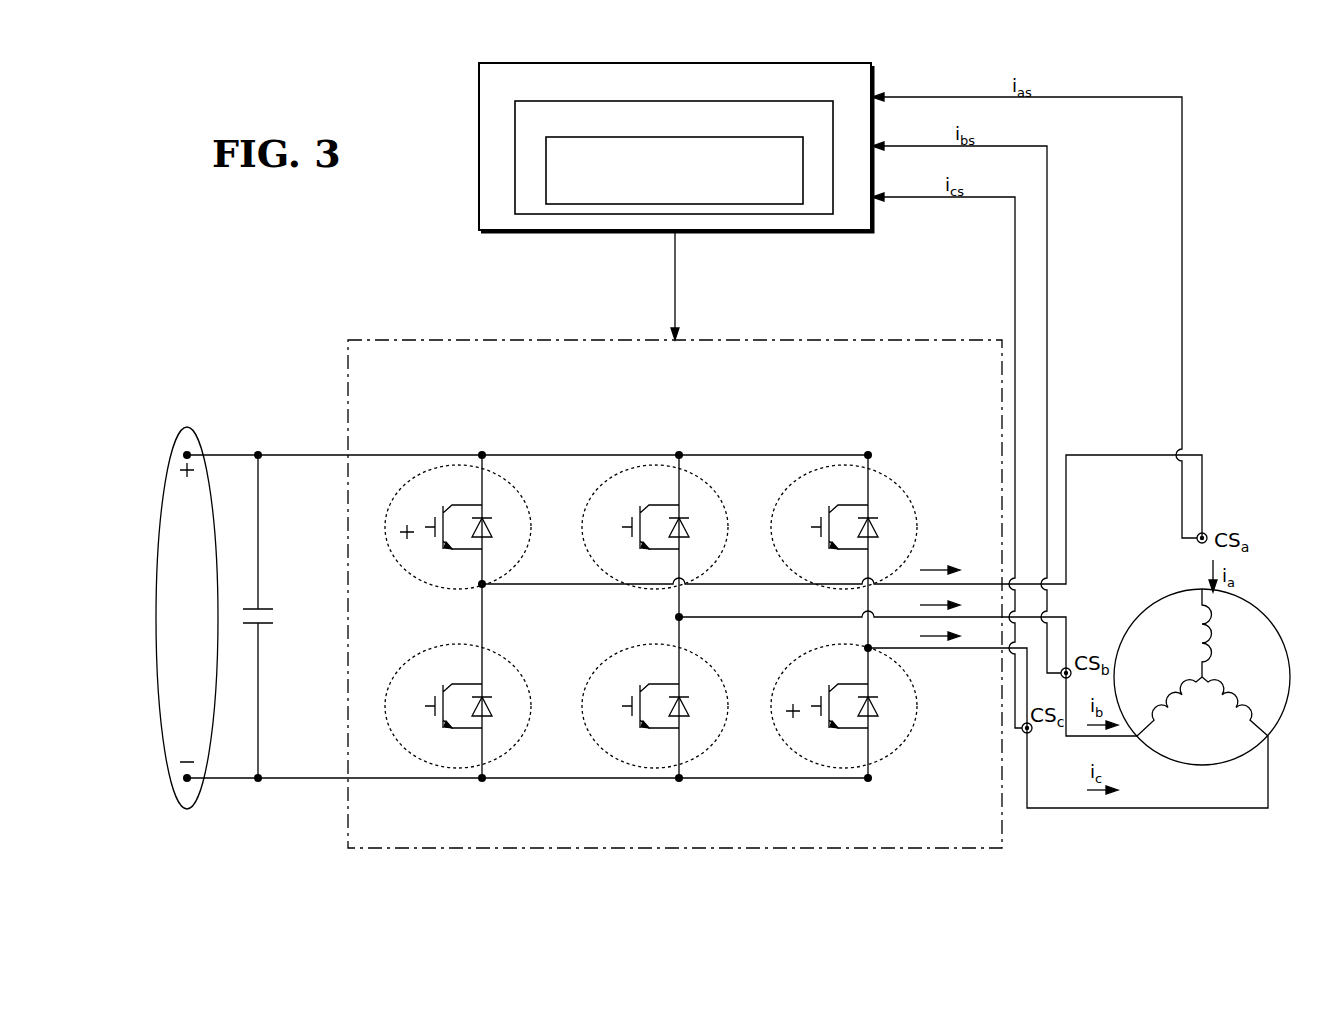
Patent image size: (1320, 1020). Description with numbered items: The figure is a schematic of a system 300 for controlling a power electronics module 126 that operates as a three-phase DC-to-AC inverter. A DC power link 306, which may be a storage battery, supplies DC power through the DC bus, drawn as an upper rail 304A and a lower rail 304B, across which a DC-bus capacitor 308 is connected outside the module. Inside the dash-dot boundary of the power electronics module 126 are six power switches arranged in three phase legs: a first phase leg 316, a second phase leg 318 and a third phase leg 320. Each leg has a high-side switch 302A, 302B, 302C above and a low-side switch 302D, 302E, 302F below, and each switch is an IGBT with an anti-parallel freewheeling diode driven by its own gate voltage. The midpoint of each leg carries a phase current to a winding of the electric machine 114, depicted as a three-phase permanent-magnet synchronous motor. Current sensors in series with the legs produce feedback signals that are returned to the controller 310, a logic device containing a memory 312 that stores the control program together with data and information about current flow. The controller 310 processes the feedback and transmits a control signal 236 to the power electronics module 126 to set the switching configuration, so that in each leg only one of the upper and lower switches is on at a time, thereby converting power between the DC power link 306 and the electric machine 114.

The system 300 is at (958, 60).
The controller 310 is at (668, 63).
The memory 312 is at (824, 101).
The control signal 236 is at (675, 282).
The power electronics module 126 is at (530, 340).
The DC power link 306 is at (187, 427).
The DC bus positive rail 304A is at (318, 455).
The DC bus negative rail 304B is at (318, 778).
The DC-bus capacitor 308 is at (270, 630).
The high-side switch 302A is at (456, 464).
The high-side switch 302B is at (653, 464).
The high-side switch 302C is at (842, 464).
The low-side switch 302D is at (452, 768).
The low-side switch 302E is at (649, 768).
The low-side switch 302F is at (838, 768).
The first phase leg 316 is at (482, 586).
The second phase leg 318 is at (679, 618).
The third phase leg 320 is at (868, 648).
The electric machine 114 is at (1265, 614).